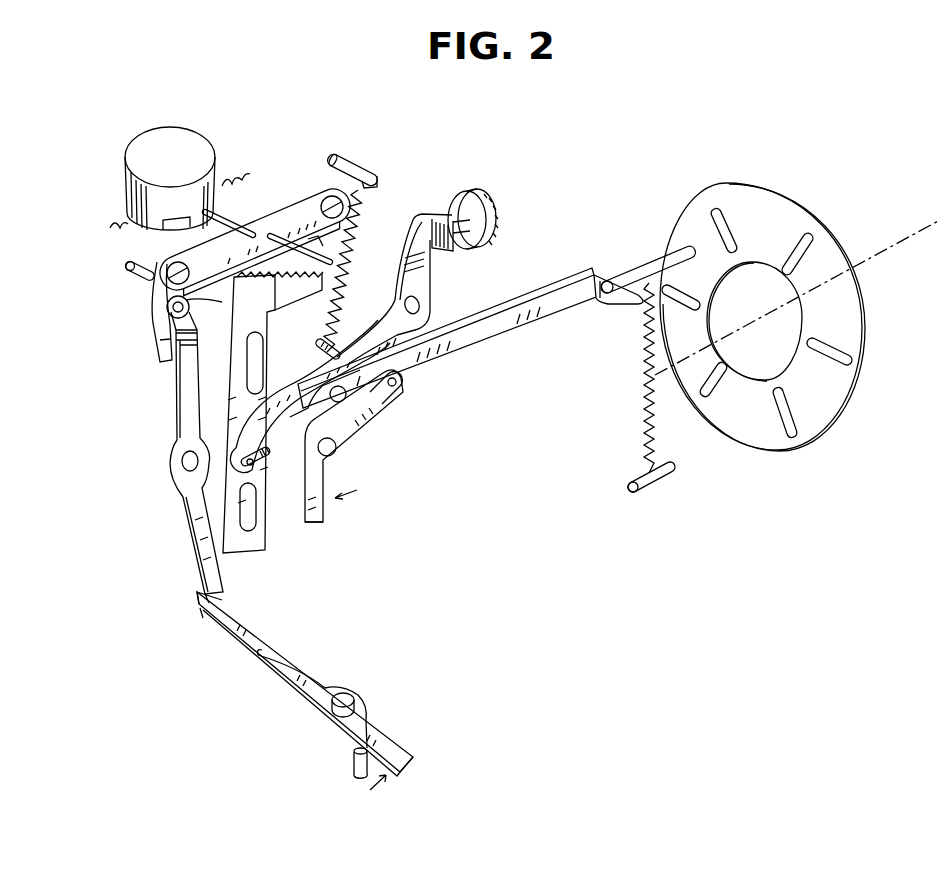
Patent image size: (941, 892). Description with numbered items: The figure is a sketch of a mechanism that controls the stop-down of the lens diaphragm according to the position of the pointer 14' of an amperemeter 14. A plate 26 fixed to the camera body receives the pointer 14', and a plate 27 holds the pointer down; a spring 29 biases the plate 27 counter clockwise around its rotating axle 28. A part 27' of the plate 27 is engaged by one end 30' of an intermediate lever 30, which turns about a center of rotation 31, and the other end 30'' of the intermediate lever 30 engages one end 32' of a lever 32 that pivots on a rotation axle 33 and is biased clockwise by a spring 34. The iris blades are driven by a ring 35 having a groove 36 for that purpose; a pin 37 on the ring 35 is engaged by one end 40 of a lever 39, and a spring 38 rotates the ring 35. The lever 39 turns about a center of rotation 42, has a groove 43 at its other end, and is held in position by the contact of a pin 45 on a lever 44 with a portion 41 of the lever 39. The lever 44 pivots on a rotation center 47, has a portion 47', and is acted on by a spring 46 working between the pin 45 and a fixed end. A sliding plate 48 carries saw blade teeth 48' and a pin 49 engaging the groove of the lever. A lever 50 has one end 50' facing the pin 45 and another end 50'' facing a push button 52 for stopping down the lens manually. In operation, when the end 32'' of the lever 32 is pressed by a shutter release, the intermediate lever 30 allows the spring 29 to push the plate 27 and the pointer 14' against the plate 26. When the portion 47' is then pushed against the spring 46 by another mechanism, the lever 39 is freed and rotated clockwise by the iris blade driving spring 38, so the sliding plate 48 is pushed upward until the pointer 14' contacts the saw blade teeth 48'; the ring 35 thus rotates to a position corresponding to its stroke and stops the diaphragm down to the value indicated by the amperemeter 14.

The amperemeter 14 is at (180, 153).
The pointer 14' is at (235, 206).
The plate 26 is at (299, 209).
The plate 27 is at (327, 247).
The part of the plate 27' is at (143, 319).
The rotating axle 28 is at (167, 316).
The spring 29 is at (160, 283).
The intermediate lever 30 is at (172, 453).
The one end of the intermediate lever 30' is at (205, 322).
The one end of the intermediate lever 30'' is at (243, 580).
The center of rotation 31 is at (182, 461).
The lever 32 is at (305, 683).
The one end of the lever 32' is at (166, 599).
The one end of the lever 32'' is at (420, 759).
The rotation axle 33 is at (344, 691).
The spring 34 is at (366, 728).
The ring 35 is at (836, 297).
The groove 36 is at (828, 346).
The pin 37 is at (655, 263).
The spring 38 is at (644, 390).
The lever 39 is at (526, 304).
The one end of the lever 40 is at (604, 274).
The portion of the lever 41 is at (400, 385).
The center of rotation 42 is at (345, 400).
The groove 43 is at (272, 456).
The lever 44 is at (298, 427).
The pin 45 is at (323, 356).
The spring 46 is at (362, 212).
The rotation center 47 is at (346, 446).
The portion of the lever 47' is at (343, 512).
The sliding plate 48 is at (259, 413).
The saw blade teeth 48' is at (281, 305).
The pin 49 is at (258, 468).
The lever 50 is at (394, 264).
The one end of the lever 50' is at (310, 378).
The one end of the lever 50'' is at (471, 253).
The push button 52 is at (483, 199).